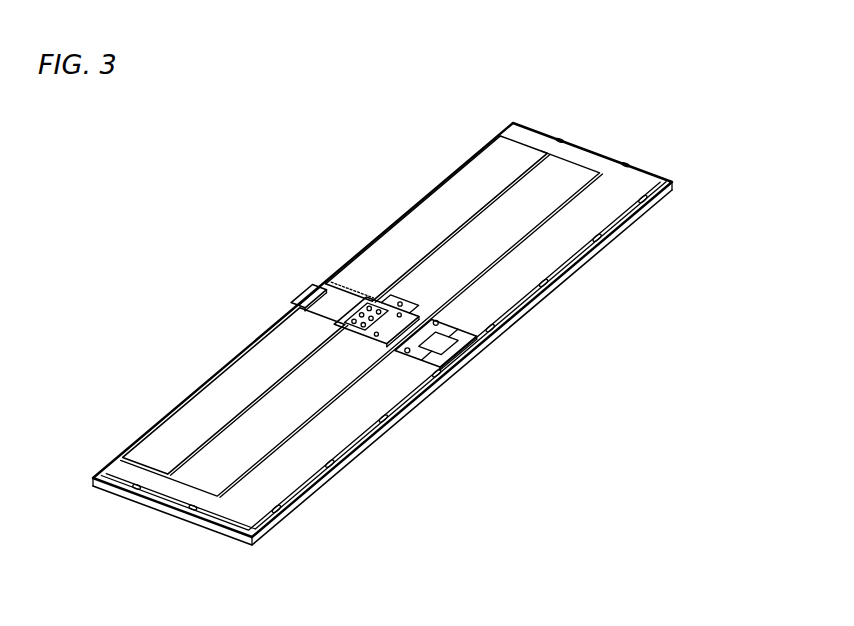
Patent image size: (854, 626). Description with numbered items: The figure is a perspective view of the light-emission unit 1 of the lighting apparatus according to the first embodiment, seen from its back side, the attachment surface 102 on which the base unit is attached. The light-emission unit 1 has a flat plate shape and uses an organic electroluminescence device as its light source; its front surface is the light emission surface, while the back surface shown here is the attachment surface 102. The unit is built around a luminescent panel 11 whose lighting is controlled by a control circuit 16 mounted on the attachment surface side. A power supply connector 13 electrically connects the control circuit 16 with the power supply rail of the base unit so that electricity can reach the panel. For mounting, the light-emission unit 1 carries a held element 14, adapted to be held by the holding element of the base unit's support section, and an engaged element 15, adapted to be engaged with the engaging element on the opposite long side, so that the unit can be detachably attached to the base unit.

The light-emission unit 1 is at (399, 334).
The luminescent panel 11 is at (399, 334).
The power supply connector 13 is at (378, 379).
The held element 14 is at (294, 283).
The engaged element 15 is at (458, 354).
The control circuit 16 is at (438, 219).
The attachment surface 102 is at (383, 324).